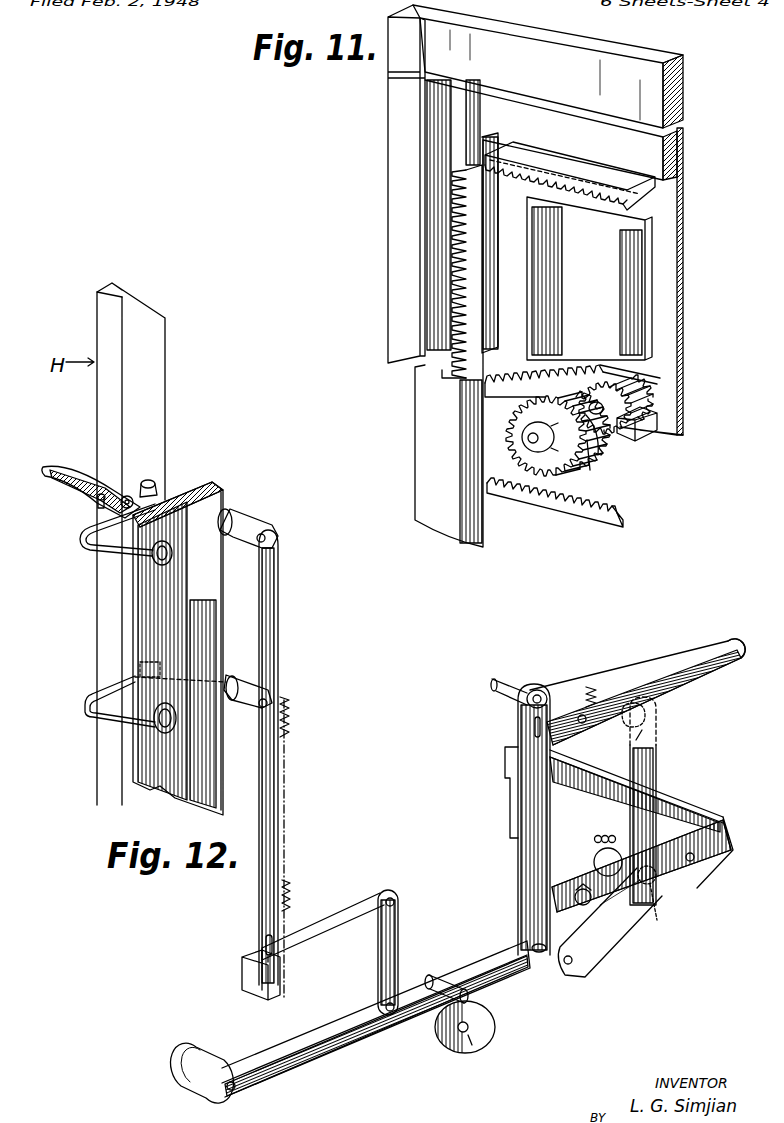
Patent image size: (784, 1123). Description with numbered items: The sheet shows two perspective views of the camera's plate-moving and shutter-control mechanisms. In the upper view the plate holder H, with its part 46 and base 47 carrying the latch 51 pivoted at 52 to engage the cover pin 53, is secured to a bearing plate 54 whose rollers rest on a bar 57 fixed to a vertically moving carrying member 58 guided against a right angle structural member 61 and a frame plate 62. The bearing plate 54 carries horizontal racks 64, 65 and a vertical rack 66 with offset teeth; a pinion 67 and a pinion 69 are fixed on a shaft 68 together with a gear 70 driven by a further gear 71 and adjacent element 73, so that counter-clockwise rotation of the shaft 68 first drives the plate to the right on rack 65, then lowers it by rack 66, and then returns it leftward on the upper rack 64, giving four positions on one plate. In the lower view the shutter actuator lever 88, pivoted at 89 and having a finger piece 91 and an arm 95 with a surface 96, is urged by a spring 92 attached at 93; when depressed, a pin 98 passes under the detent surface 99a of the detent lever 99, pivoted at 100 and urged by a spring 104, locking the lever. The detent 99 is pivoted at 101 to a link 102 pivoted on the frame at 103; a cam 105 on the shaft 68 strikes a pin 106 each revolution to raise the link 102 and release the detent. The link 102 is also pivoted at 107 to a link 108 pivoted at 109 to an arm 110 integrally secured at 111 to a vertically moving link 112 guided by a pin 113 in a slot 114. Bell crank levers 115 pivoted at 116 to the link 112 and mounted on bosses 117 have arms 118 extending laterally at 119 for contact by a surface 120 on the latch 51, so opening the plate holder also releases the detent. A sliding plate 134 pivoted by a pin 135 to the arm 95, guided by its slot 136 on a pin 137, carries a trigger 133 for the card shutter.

In FIG. 12, the guide strip 46 is at (104, 396).
In FIG. 12, the base 47 is at (158, 395).
In FIG. 12, the latch 51 is at (53, 462).
In FIG. 12, the pivot 52 is at (130, 494).
In FIG. 12, the pin 53 is at (100, 493).
In FIG. 11, the bearing plate 54 is at (683, 203).
In FIG. 11, the bar 57 is at (615, 48).
In FIG. 11, the carrying member 58 is at (395, 10).
In FIG. 12, the carrying member 58 is at (462, 1033).
In FIG. 12, the right angle structural member 61 is at (142, 600).
In FIG. 11, the plate 62 is at (655, 157).
In FIG. 11, the horizontal rack 64 is at (598, 203).
In FIG. 11, the horizontal rack 65 is at (527, 370).
In FIG. 11, the vertical rack 66 is at (470, 285).
In FIG. 11, the pinion 67 is at (640, 399).
In FIG. 11, the shaft 68 is at (535, 444).
In FIG. 11, the pinion 69 is at (617, 443).
In FIG. 11, the gear 70 is at (553, 460).
In FIG. 11, the gear 71 is at (563, 513).
In FIG. 11, the shaft 73 is at (590, 470).
In FIG. 12, the shutter actuator lever 88 is at (657, 678).
In FIG. 12, the pivotal mounting 89 is at (693, 861).
In FIG. 12, the finger piece 91 is at (718, 643).
In FIG. 12, the spring 92 is at (591, 686).
In FIG. 12, the spring attachment 93 is at (580, 715).
In FIG. 12, the arm 95 is at (620, 933).
In FIG. 12, the surface 96 is at (554, 977).
In FIG. 12, the pin 98 is at (628, 706).
In FIG. 12, the detent lever 99 is at (658, 770).
In FIG. 12, the detent surface 99a is at (642, 740).
In FIG. 12, the pivot 100 is at (657, 920).
In FIG. 12, the pivot 101 is at (579, 888).
In FIG. 12, the link 102 is at (476, 936).
In FIG. 12, the pivot 103 is at (234, 1089).
In FIG. 12, the spring 104 is at (598, 842).
In FIG. 11, the cam 105 is at (607, 447).
In FIG. 12, the cam 105 is at (473, 1048).
In FIG. 12, the pin 106 is at (442, 975).
In FIG. 12, the pivot 107 is at (390, 1012).
In FIG. 12, the link 108 is at (398, 905).
In FIG. 12, the pivot 109 is at (392, 897).
In FIG. 12, the arm 110 is at (326, 918).
In FIG. 12, the connection 111 is at (256, 982).
In FIG. 12, the vertically moving link 112 is at (270, 826).
In FIG. 12, the pin 113 is at (266, 940).
In FIG. 12, the slot 114 is at (266, 953).
In FIG. 12, the bell crank lever 115 is at (250, 513).
In FIG. 12, the pivot 116 is at (266, 543).
In FIG. 12, the boss 117 is at (190, 557).
In FIG. 12, the arm 118 is at (86, 545).
In FIG. 12, the lateral portion 119 is at (97, 522).
In FIG. 12, the surface 120 is at (160, 490).
In FIG. 12, the trigger 133 is at (505, 747).
In FIG. 12, the sliding plate 134 is at (533, 860).
In FIG. 12, the pin 135 is at (537, 953).
In FIG. 12, the slot 136 is at (535, 722).
In FIG. 12, the pin 137 is at (502, 692).